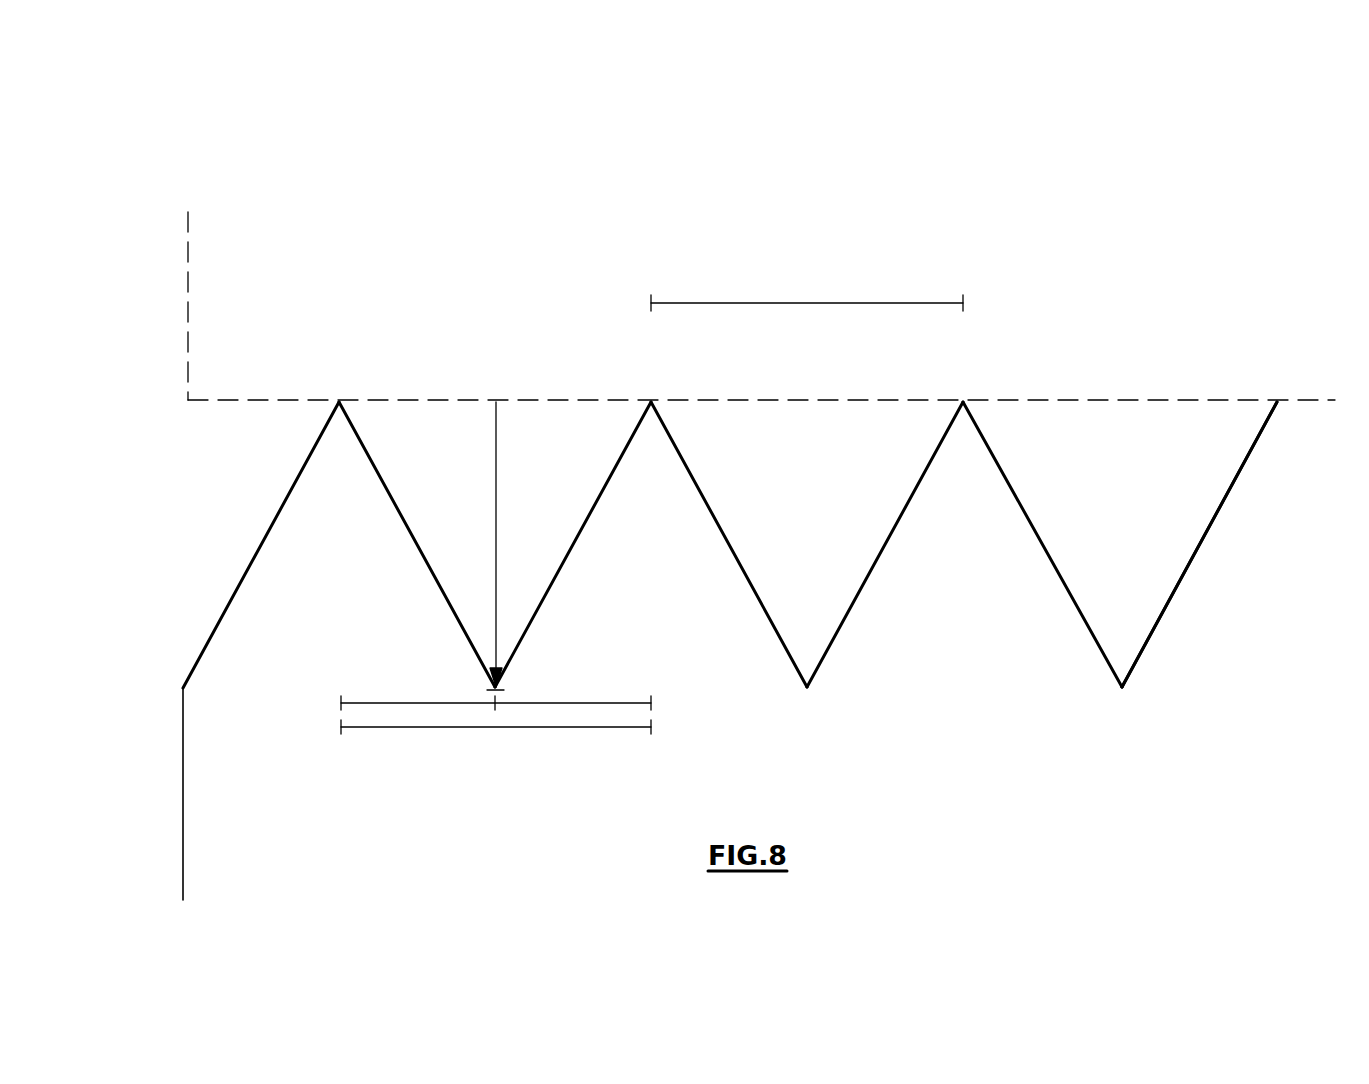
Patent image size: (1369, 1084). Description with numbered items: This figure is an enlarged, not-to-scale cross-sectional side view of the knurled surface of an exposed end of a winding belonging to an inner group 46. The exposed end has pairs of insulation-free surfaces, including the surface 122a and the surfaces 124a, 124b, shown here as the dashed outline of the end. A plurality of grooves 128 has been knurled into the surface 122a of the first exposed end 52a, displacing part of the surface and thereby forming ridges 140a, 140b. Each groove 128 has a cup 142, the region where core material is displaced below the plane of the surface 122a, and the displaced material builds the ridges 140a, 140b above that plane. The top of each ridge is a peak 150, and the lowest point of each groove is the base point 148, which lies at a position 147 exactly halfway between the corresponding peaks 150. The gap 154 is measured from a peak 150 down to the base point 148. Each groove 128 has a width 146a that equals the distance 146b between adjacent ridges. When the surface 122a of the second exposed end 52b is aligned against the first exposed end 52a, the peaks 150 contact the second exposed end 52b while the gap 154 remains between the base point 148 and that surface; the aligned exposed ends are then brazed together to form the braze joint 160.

The inner group 46 is at (702, 286).
The first exposed end 52a is at (1040, 716).
The second exposed end 52b is at (1058, 274).
The surface 122a is at (243, 544).
The surface 124a is at (183, 837).
The surface 124b is at (188, 293).
The groove 128 is at (425, 428).
The ridge 140a is at (352, 496).
The ridge 140b is at (643, 485).
The cup 142 is at (453, 569).
The width 146a is at (497, 727).
The distance 146b is at (822, 303).
The position 147 is at (496, 703).
The base point 148 is at (500, 687).
The peak 150 is at (339, 402).
The gap 154 is at (497, 541).
The braze joint 160 is at (1173, 526).